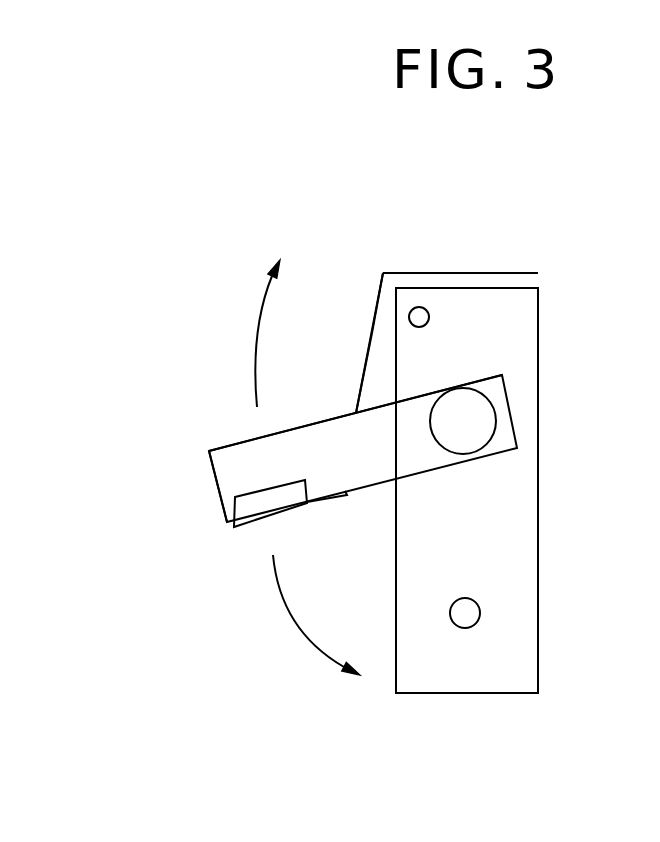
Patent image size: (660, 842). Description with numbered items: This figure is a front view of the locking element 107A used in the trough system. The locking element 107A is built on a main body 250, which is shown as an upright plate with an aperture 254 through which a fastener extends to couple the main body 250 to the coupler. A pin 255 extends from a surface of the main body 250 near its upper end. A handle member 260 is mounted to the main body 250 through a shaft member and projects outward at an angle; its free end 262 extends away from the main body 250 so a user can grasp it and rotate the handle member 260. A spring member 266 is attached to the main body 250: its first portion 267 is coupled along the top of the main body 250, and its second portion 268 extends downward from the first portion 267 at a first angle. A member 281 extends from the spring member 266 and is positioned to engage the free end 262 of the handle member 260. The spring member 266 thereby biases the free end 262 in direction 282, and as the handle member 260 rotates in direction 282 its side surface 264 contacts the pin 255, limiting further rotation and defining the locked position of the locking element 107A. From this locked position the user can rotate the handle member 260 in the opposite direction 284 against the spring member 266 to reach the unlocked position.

The locking element 107A is at (512, 211).
The main body 250 is at (495, 677).
The aperture 254 is at (480, 615).
The pin 255 is at (420, 316).
The handle member 260 is at (225, 463).
The free end 262 is at (217, 490).
The side surface 264 is at (305, 428).
The spring member 266 is at (382, 281).
The first portion 267 is at (505, 273).
The second portion 268 is at (372, 345).
The member 281 is at (288, 507).
The direction 282 is at (255, 333).
The direction 284 is at (300, 620).